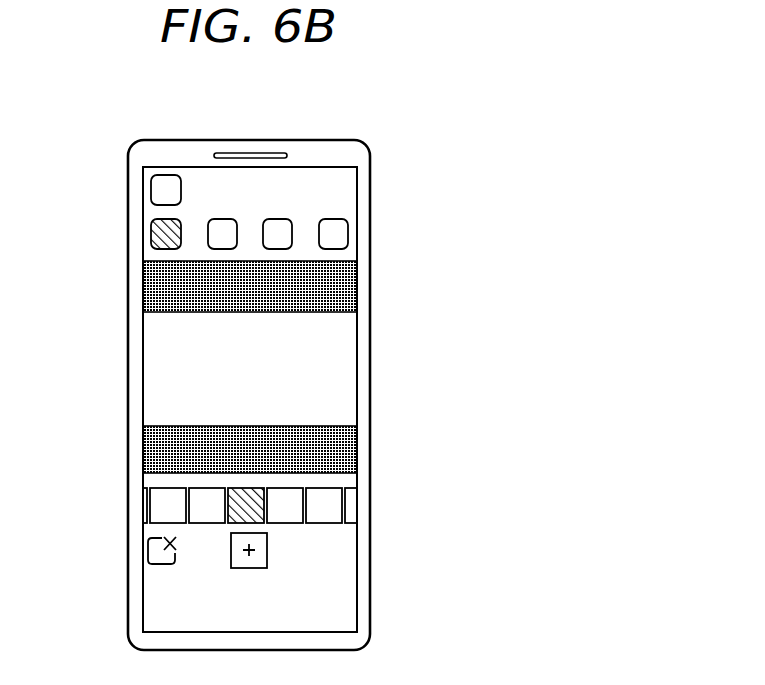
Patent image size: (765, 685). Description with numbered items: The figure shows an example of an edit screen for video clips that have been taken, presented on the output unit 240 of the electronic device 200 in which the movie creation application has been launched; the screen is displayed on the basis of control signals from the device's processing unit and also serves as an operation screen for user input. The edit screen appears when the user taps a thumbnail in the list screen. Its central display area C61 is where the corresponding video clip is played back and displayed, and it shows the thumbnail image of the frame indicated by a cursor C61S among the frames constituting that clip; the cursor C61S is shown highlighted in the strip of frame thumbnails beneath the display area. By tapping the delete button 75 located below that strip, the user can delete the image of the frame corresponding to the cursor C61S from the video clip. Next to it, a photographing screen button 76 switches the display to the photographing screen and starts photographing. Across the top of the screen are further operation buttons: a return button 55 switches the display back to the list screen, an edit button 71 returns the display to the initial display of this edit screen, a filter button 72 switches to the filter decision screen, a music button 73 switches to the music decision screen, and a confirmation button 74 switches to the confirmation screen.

The electronic device 200 is at (322, 140).
The output unit 240 is at (352, 195).
The display area C61 is at (183, 366).
The cursor C61S is at (158, 545).
The return button 55 is at (163, 193).
The edit button 71 is at (167, 238).
The filter button 72 is at (222, 228).
The music button 73 is at (275, 228).
The confirmation button 74 is at (332, 228).
The delete button 75 is at (163, 553).
The photographing screen button 76 is at (257, 559).